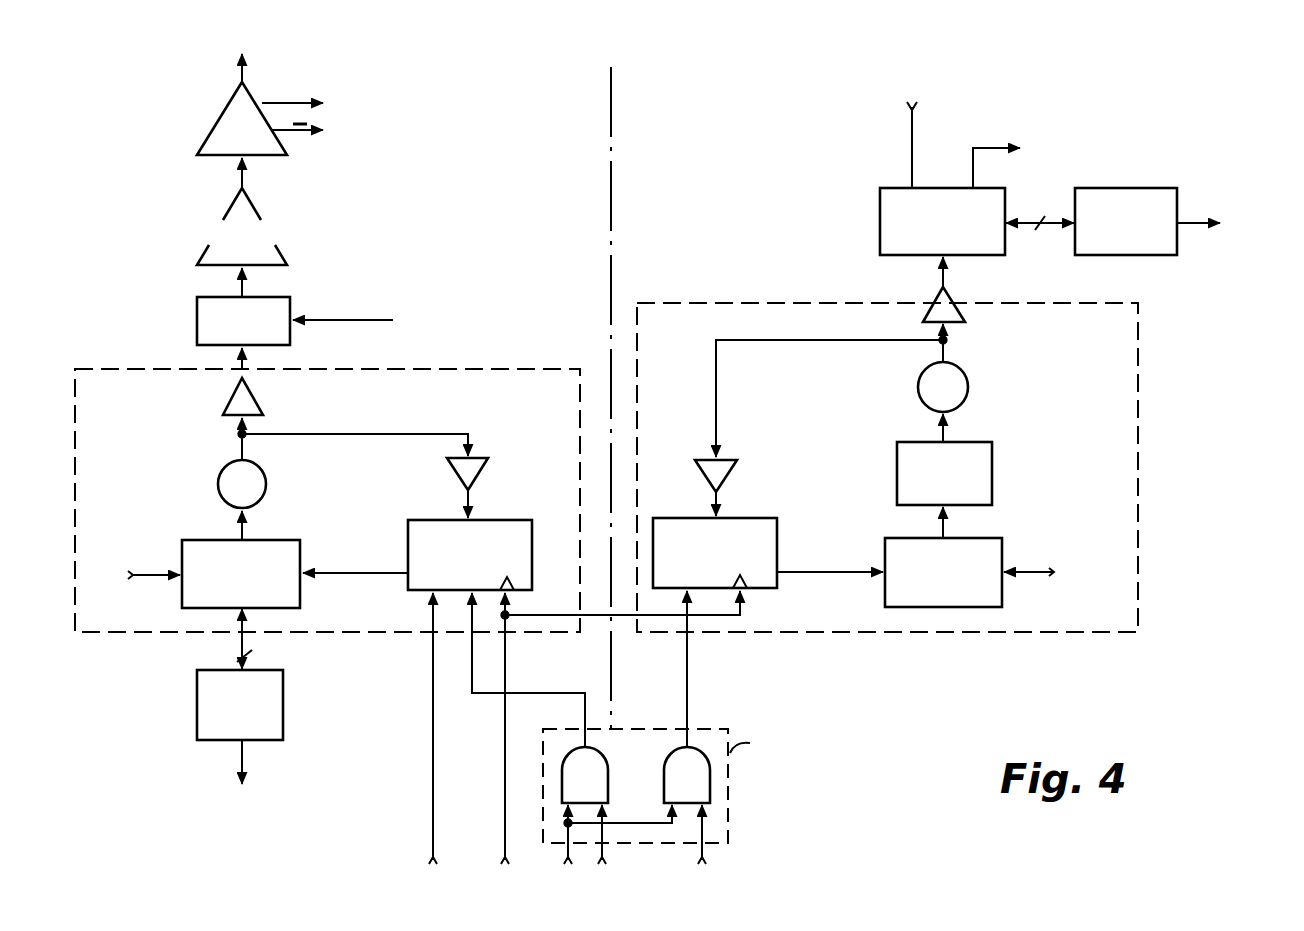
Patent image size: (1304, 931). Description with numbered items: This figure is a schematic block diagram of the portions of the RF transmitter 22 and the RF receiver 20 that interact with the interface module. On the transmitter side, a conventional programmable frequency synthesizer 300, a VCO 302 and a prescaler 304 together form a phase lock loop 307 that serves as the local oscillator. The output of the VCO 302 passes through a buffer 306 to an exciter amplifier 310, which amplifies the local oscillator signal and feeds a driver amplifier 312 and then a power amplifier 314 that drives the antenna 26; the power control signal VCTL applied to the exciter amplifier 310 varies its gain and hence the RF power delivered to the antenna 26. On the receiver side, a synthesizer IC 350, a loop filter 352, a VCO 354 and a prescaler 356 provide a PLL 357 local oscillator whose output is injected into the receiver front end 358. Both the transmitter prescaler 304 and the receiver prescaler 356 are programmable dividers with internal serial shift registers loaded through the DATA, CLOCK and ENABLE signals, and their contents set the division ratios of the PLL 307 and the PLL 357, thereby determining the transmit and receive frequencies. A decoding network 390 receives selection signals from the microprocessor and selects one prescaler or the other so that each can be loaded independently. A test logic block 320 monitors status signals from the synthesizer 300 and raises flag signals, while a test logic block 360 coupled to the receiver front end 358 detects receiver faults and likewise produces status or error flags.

The RF receiver 20 is at (668, 161).
The RF transmitter 22 is at (525, 161).
The antenna 26 is at (566, 108).
The programmable frequency synthesizer 300 is at (293, 538).
The VCO 302 is at (266, 468).
The prescaler 304 is at (503, 525).
The buffer 306 is at (257, 397).
The phase lock loop 307 is at (105, 368).
The exciter amplifier 310 is at (197, 313).
The driver amplifier 312 is at (253, 195).
The power amplifier 314 is at (212, 127).
The test logic block 320 is at (285, 700).
The synthesizer IC 350 is at (902, 537).
The loop filter 352 is at (903, 440).
The VCO 354 is at (970, 395).
The prescaler 356 is at (737, 518).
The PLL 357 is at (1140, 430).
The receiver front end 358 is at (880, 225).
The test logic block 360 is at (1157, 255).
The decoding network 390 is at (730, 837).